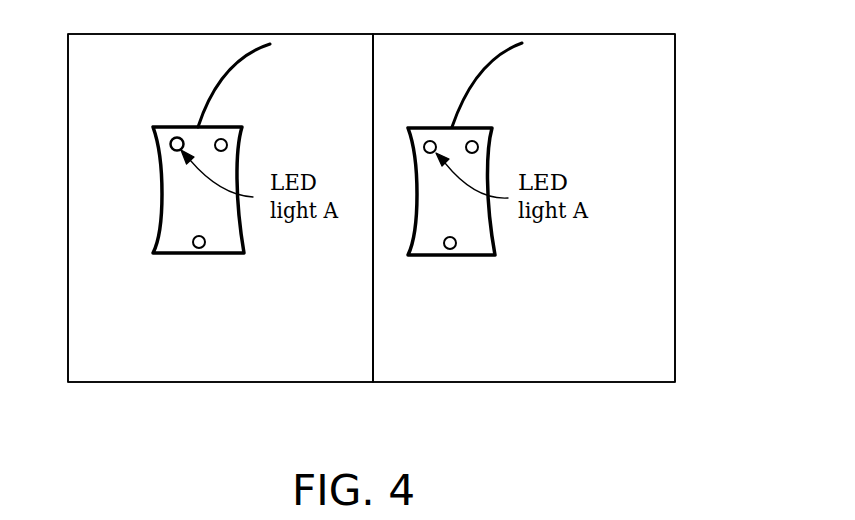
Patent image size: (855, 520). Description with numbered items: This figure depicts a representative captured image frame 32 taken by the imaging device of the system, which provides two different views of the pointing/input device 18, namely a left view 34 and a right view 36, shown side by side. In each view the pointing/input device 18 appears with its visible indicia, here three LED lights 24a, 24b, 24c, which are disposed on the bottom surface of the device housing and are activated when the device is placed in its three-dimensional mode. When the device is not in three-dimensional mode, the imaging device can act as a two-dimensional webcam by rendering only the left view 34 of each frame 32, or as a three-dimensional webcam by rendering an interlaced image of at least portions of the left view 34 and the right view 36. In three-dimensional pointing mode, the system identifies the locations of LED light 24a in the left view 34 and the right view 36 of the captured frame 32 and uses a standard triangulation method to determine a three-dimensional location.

The captured image frame 32 is at (692, 162).
The left view 34 is at (140, 88).
The right view 36 is at (635, 92).
The pointing/input device 18 is at (160, 255).
The LED light 24a is at (170, 145).
The LED light 24b is at (232, 134).
The LED light 24c is at (203, 248).